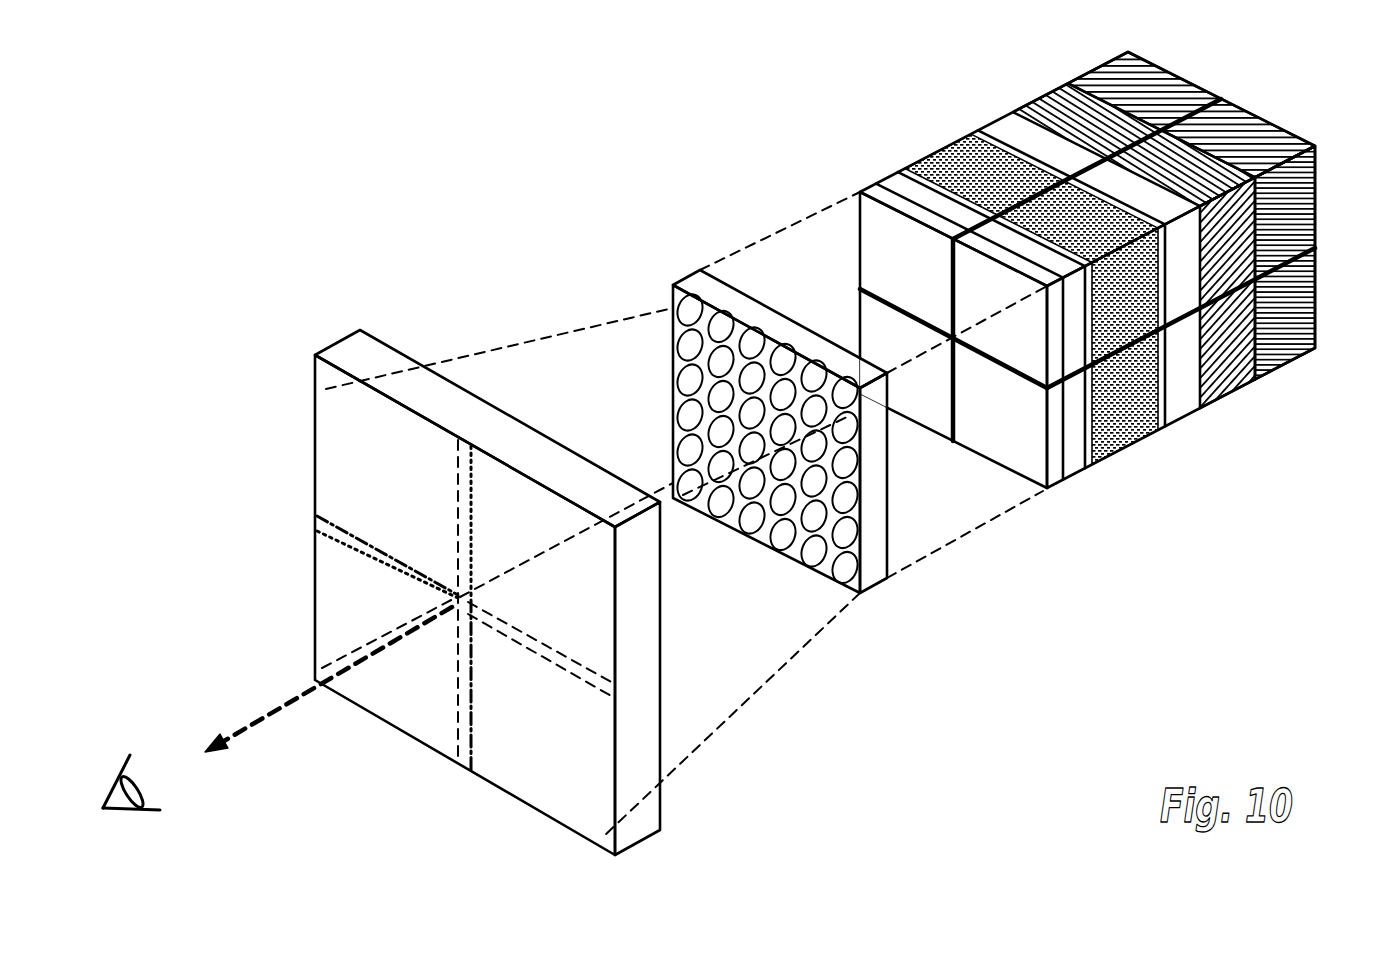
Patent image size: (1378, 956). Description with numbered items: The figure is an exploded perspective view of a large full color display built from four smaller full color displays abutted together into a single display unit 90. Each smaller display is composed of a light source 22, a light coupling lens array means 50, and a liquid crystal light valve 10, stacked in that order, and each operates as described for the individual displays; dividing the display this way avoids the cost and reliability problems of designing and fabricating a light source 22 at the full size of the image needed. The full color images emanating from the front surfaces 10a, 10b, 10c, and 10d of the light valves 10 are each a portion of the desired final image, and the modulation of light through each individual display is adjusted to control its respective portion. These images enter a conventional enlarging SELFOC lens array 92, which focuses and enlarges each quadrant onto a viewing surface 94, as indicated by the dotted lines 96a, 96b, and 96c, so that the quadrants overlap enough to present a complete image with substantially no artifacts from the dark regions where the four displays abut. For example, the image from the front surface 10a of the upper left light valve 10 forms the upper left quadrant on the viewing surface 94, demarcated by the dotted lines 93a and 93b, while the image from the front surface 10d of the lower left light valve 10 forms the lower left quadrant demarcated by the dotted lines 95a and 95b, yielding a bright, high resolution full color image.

The display unit 90 is at (1080, 293).
The liquid crystal light valve 10 is at (1000, 359).
The front surface of upper left light valve 10a is at (880, 213).
The front surface of light valve 10b is at (973, 308).
The front surface of light valve 10c is at (1012, 443).
The front surface of lower left light valve 10d is at (880, 329).
The light source 22 is at (1290, 363).
The light coupling lens array means 50 is at (1232, 397).
The enlarging SELFOC lens array 92 is at (878, 590).
The viewing surface 94 is at (477, 598).
The dotted line 93a is at (475, 507).
The dotted line 93b is at (410, 583).
The dotted line 95a is at (350, 530).
The dotted line 95b is at (472, 705).
The dotted line 96a is at (700, 740).
The dotted line 96b is at (636, 522).
The dotted line 96c is at (500, 346).